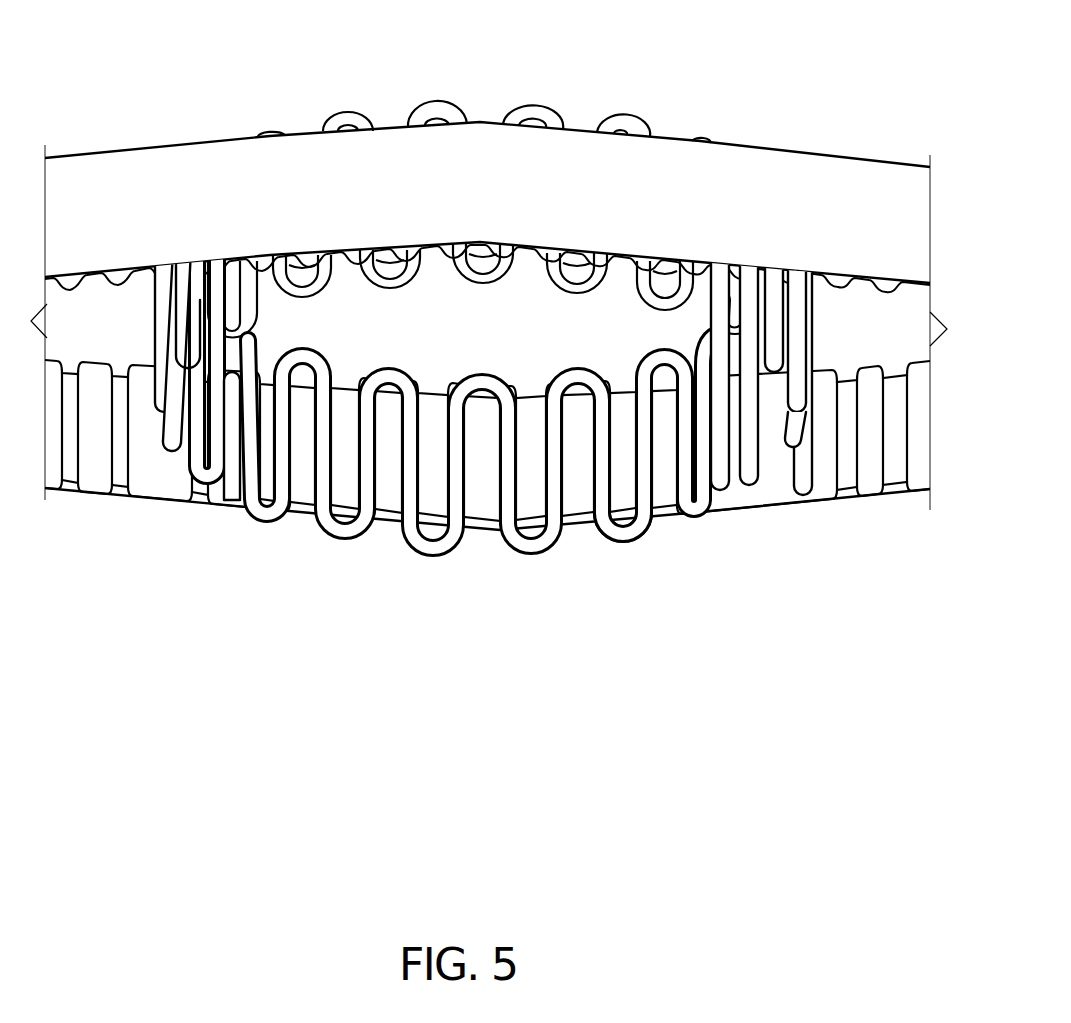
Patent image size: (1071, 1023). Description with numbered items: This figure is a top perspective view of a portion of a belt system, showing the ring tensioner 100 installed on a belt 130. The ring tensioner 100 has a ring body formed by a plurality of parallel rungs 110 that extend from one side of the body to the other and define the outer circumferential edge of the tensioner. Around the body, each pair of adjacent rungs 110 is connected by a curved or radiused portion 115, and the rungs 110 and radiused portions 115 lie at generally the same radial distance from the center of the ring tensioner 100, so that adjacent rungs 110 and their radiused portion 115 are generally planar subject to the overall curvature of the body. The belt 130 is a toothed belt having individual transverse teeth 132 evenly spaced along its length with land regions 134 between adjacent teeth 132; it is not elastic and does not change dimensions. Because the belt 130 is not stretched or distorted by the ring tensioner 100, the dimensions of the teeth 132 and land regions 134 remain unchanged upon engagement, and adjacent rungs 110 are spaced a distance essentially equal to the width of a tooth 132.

The ring tensioner 100 is at (487, 320).
The rungs 110 is at (498, 480).
The radiused portion 115 is at (628, 542).
The belt 130 is at (197, 143).
The teeth 132 is at (142, 484).
The land regions 134 is at (122, 489).